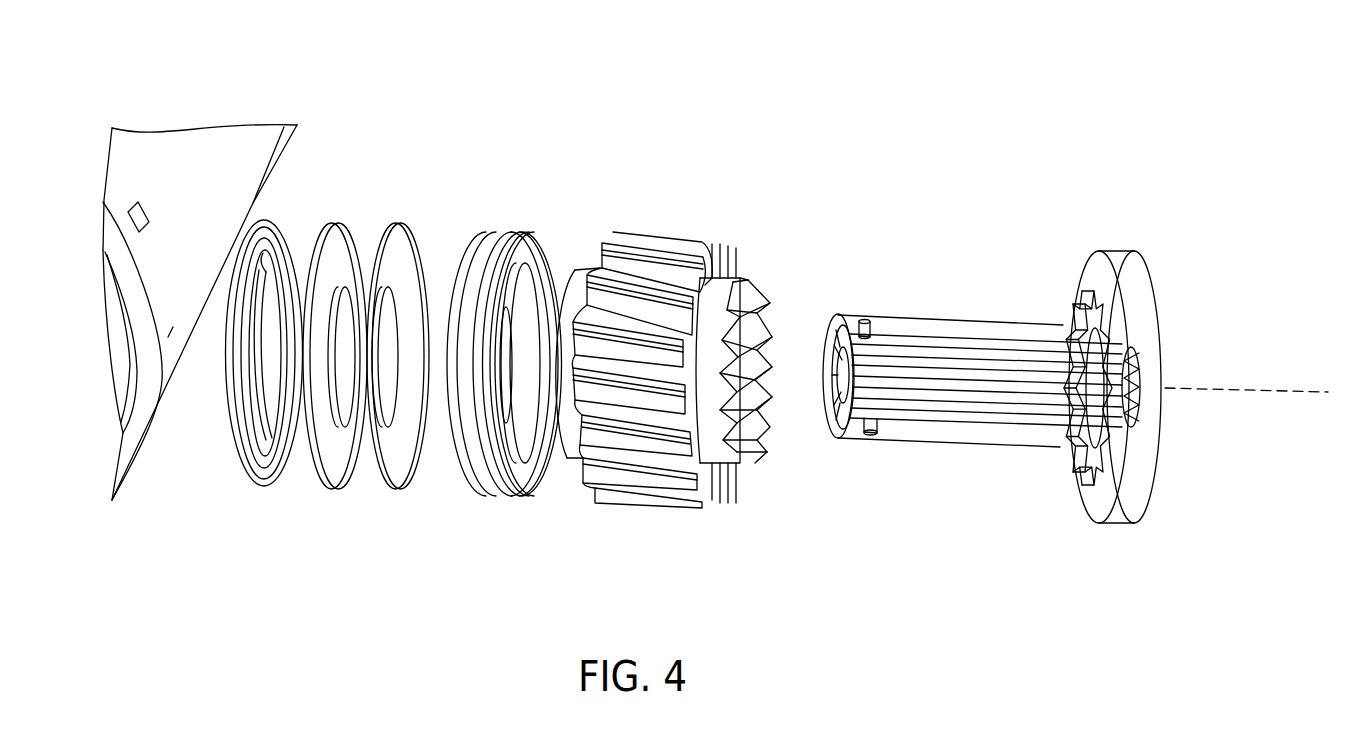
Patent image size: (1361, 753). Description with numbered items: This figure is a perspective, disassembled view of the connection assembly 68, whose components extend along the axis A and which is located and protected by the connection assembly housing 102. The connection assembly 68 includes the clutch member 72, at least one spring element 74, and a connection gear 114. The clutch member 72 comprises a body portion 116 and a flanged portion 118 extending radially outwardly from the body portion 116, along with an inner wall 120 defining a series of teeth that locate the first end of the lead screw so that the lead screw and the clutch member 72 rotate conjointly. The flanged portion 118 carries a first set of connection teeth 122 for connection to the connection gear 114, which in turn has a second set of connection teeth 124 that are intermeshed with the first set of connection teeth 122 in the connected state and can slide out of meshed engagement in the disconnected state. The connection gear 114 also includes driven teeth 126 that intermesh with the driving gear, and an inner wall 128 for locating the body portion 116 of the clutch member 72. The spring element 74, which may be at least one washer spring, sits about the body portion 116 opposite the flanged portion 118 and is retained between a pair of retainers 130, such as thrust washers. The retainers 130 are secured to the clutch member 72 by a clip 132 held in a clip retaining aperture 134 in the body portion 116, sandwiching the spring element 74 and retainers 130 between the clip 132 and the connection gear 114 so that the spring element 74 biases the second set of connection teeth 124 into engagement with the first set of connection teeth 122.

The connection assembly 68 is at (1087, 109).
The clutch member 72 is at (1163, 333).
The spring element 74 is at (350, 250).
The connection assembly housing 102 is at (128, 158).
The connection gear 114 is at (726, 273).
The body portion 116 is at (957, 317).
The flanged portion 118 is at (1110, 250).
The inner wall 120 is at (955, 425).
The first set of connection teeth 122 is at (1067, 457).
The second set of connection teeth 124 is at (740, 463).
The driven teeth 126 is at (643, 487).
The inner wall 128 is at (743, 353).
The retainers 130 is at (257, 487).
The clip 132 is at (263, 253).
The clip retaining aperture 134 is at (866, 318).